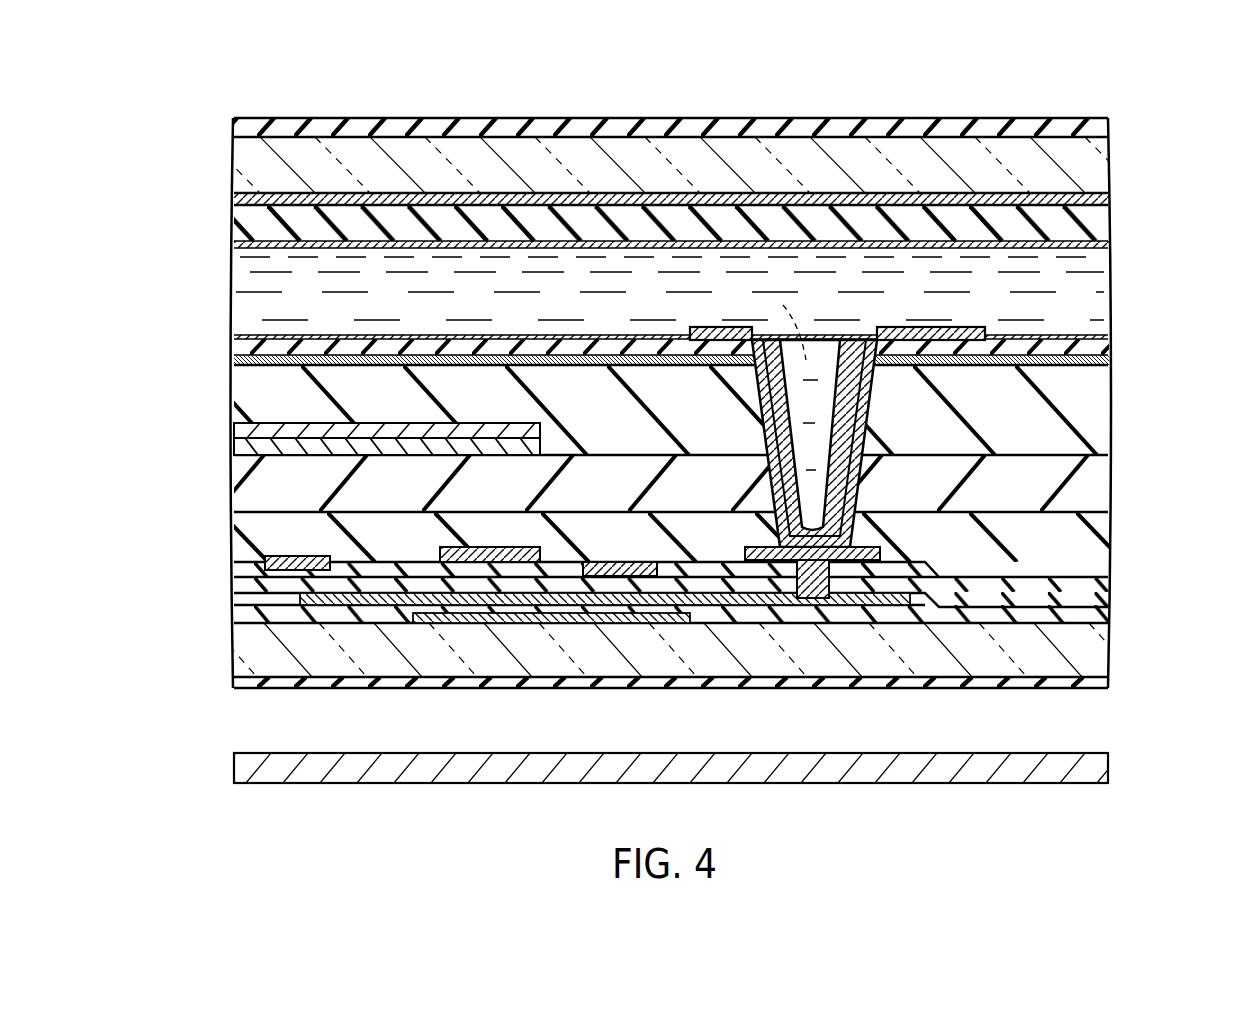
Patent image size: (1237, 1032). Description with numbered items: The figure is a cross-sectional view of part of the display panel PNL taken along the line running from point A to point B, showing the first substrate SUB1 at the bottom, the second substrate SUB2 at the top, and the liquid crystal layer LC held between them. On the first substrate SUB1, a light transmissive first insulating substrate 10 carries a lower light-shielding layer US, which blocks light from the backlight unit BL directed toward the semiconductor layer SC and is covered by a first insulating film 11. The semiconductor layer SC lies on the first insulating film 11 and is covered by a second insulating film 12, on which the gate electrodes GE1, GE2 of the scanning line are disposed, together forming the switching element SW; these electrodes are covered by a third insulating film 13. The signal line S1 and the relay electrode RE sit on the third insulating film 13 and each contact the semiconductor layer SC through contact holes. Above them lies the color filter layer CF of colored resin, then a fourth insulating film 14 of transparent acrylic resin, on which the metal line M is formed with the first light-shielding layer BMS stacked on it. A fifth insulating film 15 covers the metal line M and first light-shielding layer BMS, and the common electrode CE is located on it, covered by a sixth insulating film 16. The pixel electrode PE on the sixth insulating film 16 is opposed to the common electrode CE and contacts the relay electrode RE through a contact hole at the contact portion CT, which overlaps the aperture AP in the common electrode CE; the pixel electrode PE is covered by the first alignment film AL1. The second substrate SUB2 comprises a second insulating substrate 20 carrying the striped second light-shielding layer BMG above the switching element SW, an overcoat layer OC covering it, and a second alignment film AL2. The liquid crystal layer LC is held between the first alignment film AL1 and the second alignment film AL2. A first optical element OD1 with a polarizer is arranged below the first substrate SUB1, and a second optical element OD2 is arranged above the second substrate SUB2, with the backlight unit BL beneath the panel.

The first insulating substrate 10 is at (245, 655).
The first insulating film 11 is at (245, 613).
The second insulating film 12 is at (245, 586).
The third insulating film 13 is at (245, 572).
The fourth insulating film 14 is at (245, 490).
The fifth insulating film 15 is at (245, 400).
The sixth insulating film 16 is at (240, 348).
The second insulating substrate 20 is at (236, 152).
The lower light-shielding layer US is at (438, 623).
The semiconductor layer SC is at (385, 604).
The signal line S1 is at (300, 572).
The gate electrode GE1 is at (482, 562).
The gate electrode GE2 is at (622, 576).
The relay electrode RE is at (845, 598).
The color filter layer CF is at (243, 548).
The metal line M is at (242, 450).
The first light-shielding layer BMS is at (243, 432).
The common electrode CE is at (240, 360).
The pixel electrode PE is at (945, 336).
The contact portion CT is at (817, 400).
The aperture AP is at (777, 325).
The first alignment film AL1 is at (262, 337).
The second alignment film AL2 is at (240, 245).
The liquid crystal layer LC is at (1090, 302).
The overcoat layer OC is at (238, 226).
The second light-shielding layer BMG is at (236, 198).
The second optical element OD2 is at (1108, 128).
The first optical element OD1 is at (1107, 684).
The first substrate SUB1 is at (1118, 410).
The second substrate SUB2 is at (1122, 212).
The display panel PNL is at (1135, 170).
The backlight unit BL is at (1108, 771).
The switching element SW is at (540, 642).
The line A-B end point A is at (231, 712).
The line A-B end point B is at (1104, 712).